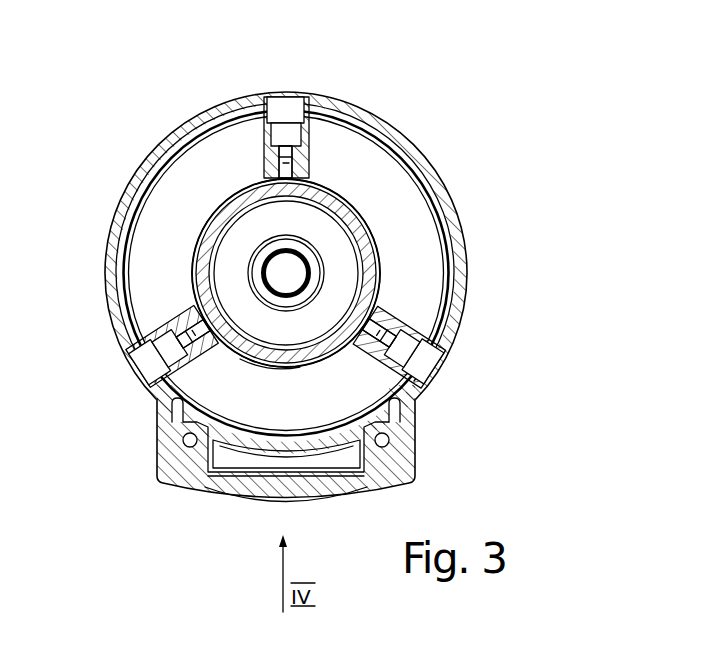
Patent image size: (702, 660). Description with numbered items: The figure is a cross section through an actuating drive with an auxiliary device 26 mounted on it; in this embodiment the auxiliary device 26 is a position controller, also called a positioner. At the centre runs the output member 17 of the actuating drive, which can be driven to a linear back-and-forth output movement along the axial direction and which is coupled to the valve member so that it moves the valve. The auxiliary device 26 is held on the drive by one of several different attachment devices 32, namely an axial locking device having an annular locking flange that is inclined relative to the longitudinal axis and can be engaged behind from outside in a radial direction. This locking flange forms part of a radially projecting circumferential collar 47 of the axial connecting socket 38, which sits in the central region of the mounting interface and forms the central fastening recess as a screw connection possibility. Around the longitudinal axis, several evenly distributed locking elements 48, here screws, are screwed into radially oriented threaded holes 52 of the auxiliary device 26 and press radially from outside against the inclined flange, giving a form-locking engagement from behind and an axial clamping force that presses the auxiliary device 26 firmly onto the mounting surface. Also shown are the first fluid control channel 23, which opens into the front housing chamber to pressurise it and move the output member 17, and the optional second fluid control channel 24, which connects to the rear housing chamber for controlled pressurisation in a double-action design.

The output member 17 is at (279, 271).
The first fluid control channel 23 is at (183, 440).
The second fluid control channel 24 is at (385, 441).
The auxiliary device 26 is at (444, 189).
The attachment devices 32 is at (350, 190).
The axial connecting socket 38 is at (265, 363).
The circumferential collar 47 is at (377, 258).
The locking elements 48 is at (305, 98).
The threaded holes 52 is at (282, 163).